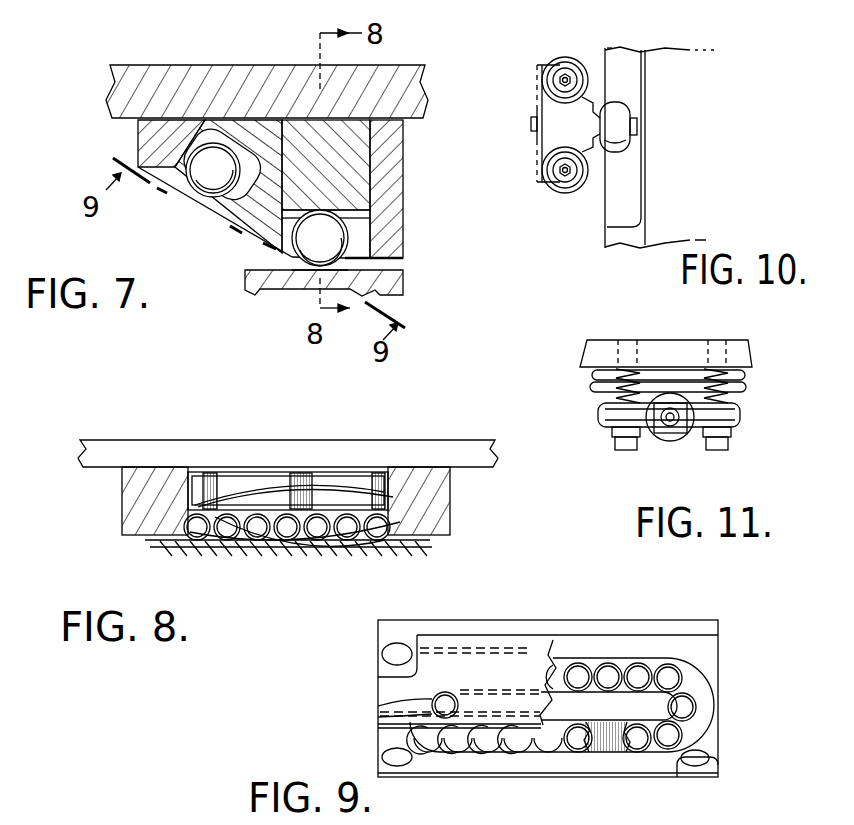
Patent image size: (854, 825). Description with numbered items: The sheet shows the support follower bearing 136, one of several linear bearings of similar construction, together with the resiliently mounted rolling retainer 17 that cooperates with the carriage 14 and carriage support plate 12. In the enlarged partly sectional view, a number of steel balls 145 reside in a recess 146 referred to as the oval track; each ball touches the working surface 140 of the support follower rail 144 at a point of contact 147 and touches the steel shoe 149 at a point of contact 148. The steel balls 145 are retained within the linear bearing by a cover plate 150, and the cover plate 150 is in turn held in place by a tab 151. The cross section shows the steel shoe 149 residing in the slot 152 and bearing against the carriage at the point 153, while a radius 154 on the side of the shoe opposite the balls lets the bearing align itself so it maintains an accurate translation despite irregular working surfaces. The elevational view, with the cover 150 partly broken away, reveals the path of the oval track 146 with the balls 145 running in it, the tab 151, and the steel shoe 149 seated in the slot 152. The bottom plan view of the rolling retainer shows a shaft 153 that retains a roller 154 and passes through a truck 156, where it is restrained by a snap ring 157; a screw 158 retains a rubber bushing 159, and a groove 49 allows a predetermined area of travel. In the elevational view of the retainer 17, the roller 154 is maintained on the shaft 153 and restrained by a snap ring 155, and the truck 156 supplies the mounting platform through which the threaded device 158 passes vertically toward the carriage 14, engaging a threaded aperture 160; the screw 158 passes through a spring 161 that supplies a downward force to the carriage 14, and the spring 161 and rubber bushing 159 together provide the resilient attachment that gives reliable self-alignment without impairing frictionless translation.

In FIG. 10, the carriage support plate 12 is at (628, 238).
In FIG. 7, the carriage 14 is at (257, 75).
In FIG. 11, the carriage 14 is at (588, 348).
In FIG. 8, the carriage 14 is at (312, 450).
In FIG. 10, the resiliently mounted rolling retainer 17 is at (672, 72).
In FIG. 10, the groove 49 is at (628, 195).
In FIG. 7, the support follower bearing 136 is at (167, 144).
In FIG. 7, the working surface 140 is at (392, 276).
In FIG. 8, the working surface 140 is at (418, 548).
In FIG. 8, the support follower rail 144 is at (388, 548).
In FIG. 7, the steel balls 145 is at (330, 262).
In FIG. 9, the steel balls 145 is at (698, 708).
In FIG. 7, the recess (oval track) 146 is at (353, 228).
In FIG. 9, the recess (oval track) 146 is at (693, 727).
In FIG. 7, the point of contact 147 is at (313, 272).
In FIG. 8, the point of contact 147 is at (380, 528).
In FIG. 7, the point of contact 148 is at (330, 207).
In FIG. 8, the point of contact 148 is at (393, 497).
In FIG. 7, the steel shoe 149 is at (345, 175).
In FIG. 8, the steel shoe 149 is at (360, 477).
In FIG. 9, the steel shoe 149 is at (590, 747).
In FIG. 7, the cover plate 150 is at (200, 206).
In FIG. 9, the cover plate 150 is at (383, 688).
In FIG. 7, the tab 151 is at (240, 236).
In FIG. 9, the tab 151 is at (432, 705).
In FIG. 7, the slot 152 is at (372, 138).
In FIG. 8, the slot 152 is at (203, 467).
In FIG. 9, the slot 152 is at (635, 743).
In FIG. 10, the shaft 153 is at (636, 123).
In FIG. 11, the shaft 153 is at (670, 442).
In FIG. 8, the shaft 153 is at (305, 465).
In FIG. 10, the roller 154 is at (623, 110).
In FIG. 11, the roller 154 is at (657, 447).
In FIG. 8, the roller 154 is at (228, 468).
In FIG. 10, the snap ring 155 is at (632, 142).
In FIG. 11, the snap ring 155 is at (670, 393).
In FIG. 10, the truck 156 is at (537, 140).
In FIG. 11, the truck 156 is at (740, 417).
In FIG. 10, the snap ring 157 is at (537, 111).
In FIG. 10, the screw 158 is at (560, 178).
In FIG. 11, the screw 158 is at (730, 443).
In FIG. 10, the rubber bushing 159 is at (580, 190).
In FIG. 11, the rubber bushing 159 is at (740, 430).
In FIG. 11, the threaded aperture 160 is at (725, 350).
In FIG. 11, the spring 161 is at (748, 385).